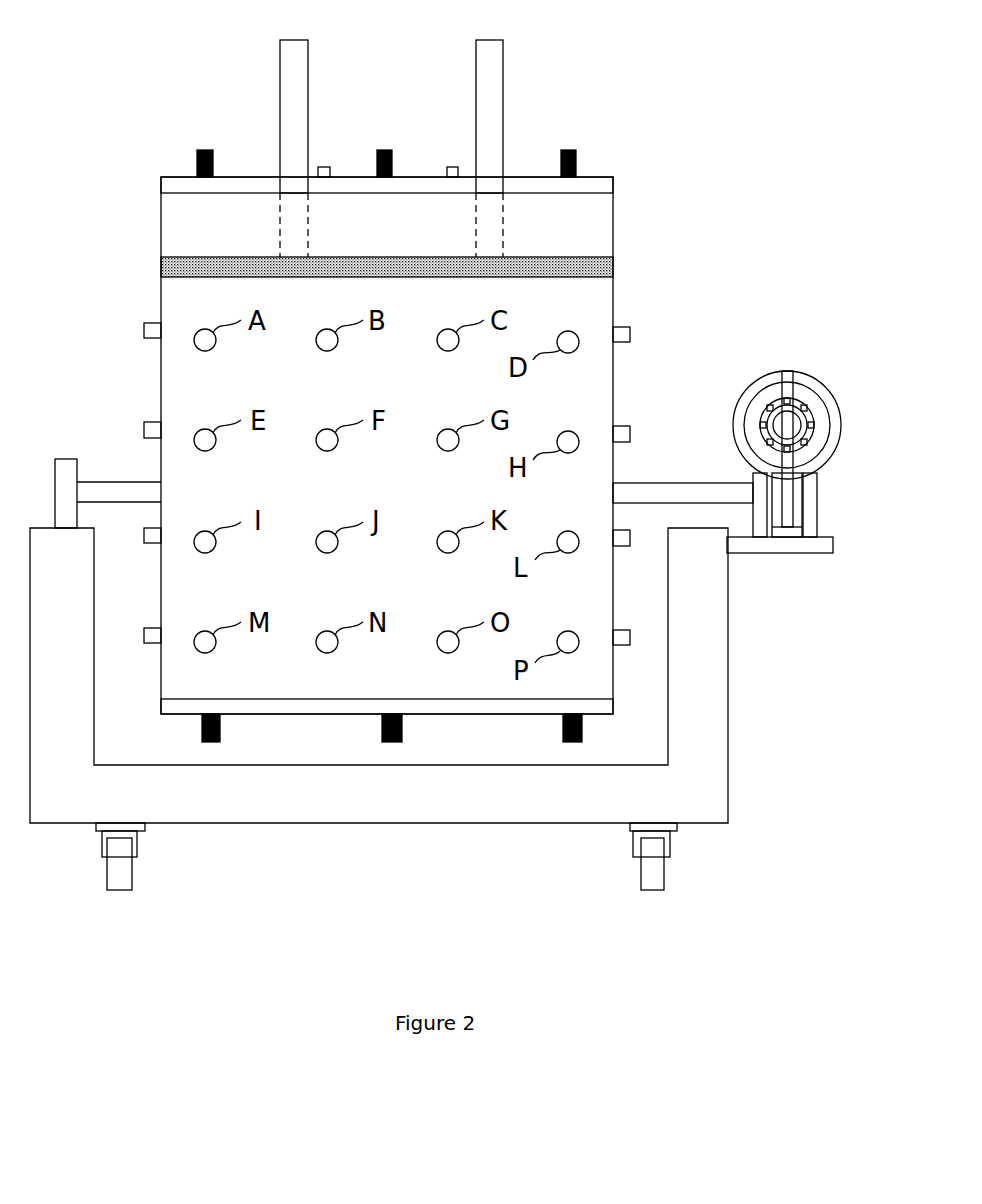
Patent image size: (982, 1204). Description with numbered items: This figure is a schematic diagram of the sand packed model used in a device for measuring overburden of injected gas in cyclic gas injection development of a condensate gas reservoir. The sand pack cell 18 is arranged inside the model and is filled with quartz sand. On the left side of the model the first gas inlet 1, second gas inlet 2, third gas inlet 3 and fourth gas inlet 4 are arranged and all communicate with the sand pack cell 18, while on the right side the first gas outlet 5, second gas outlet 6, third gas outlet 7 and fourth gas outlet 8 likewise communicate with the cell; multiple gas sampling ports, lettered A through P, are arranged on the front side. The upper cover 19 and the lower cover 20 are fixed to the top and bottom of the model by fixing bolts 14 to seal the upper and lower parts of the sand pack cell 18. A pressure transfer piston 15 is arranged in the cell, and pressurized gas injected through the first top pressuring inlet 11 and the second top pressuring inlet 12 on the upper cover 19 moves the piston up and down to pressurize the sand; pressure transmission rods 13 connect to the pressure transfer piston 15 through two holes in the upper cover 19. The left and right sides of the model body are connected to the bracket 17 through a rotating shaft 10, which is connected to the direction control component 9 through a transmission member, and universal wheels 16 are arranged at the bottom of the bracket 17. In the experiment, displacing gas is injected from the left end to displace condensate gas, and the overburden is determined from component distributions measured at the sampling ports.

The first gas inlet 1 is at (143, 330).
The second gas inlet 2 is at (143, 428).
The third gas inlet 3 is at (148, 543).
The fourth gas inlet 4 is at (146, 643).
The first gas outlet 5 is at (630, 328).
The second gas outlet 6 is at (632, 427).
The third gas outlet 7 is at (630, 546).
The fourth gas outlet 8 is at (630, 645).
The direction control component 9 is at (763, 377).
The rotating shaft 10 is at (642, 483).
The first top pressuring inlet 11 is at (324, 167).
The second top pressuring inlet 12 is at (452, 167).
The pressure transmission rod 13 is at (503, 97).
The fixing bolt 14 is at (576, 150).
The pressure transfer piston 15 is at (175, 267).
The universal wheel 16 is at (664, 872).
The bracket 17 is at (700, 690).
The sand pack cell 18 is at (487, 683).
The upper cover 19 is at (175, 183).
The lower cover 20 is at (293, 707).